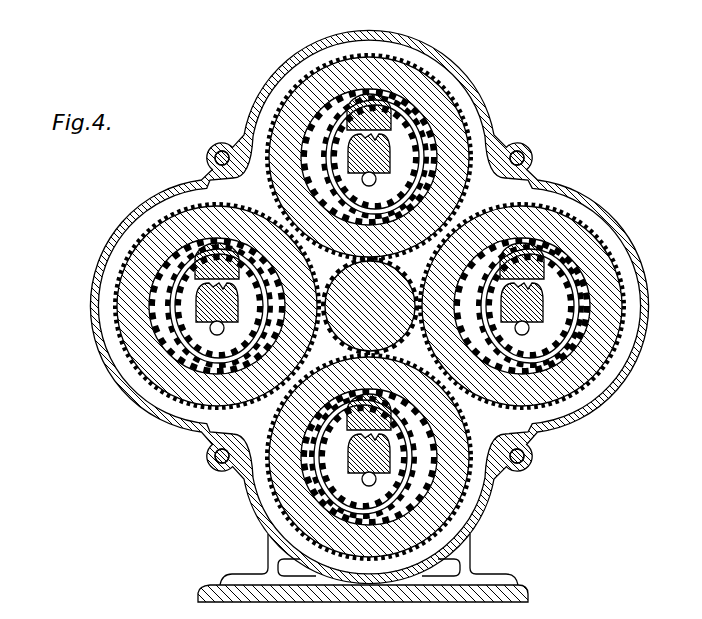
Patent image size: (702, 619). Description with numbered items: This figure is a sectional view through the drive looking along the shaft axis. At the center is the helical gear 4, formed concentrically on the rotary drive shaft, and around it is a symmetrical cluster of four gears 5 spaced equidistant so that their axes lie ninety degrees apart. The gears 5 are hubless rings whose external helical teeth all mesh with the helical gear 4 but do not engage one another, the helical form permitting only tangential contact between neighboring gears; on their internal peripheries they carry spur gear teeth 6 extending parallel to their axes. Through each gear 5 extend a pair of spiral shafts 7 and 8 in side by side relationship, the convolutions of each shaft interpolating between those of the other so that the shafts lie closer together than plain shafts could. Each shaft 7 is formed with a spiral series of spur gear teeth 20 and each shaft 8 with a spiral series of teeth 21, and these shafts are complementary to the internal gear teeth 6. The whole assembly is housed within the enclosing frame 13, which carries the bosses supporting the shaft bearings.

The helical gear 4 is at (415, 323).
The gears 5 is at (432, 76).
The spur gear teeth 6 is at (290, 126).
The spiral shaft 7 is at (364, 186).
The spiral shaft 8 is at (396, 110).
The enclosing frame 13 is at (490, 122).
The spiral series of spur gear teeth 20 is at (420, 188).
The spiral series of teeth 21 is at (393, 140).